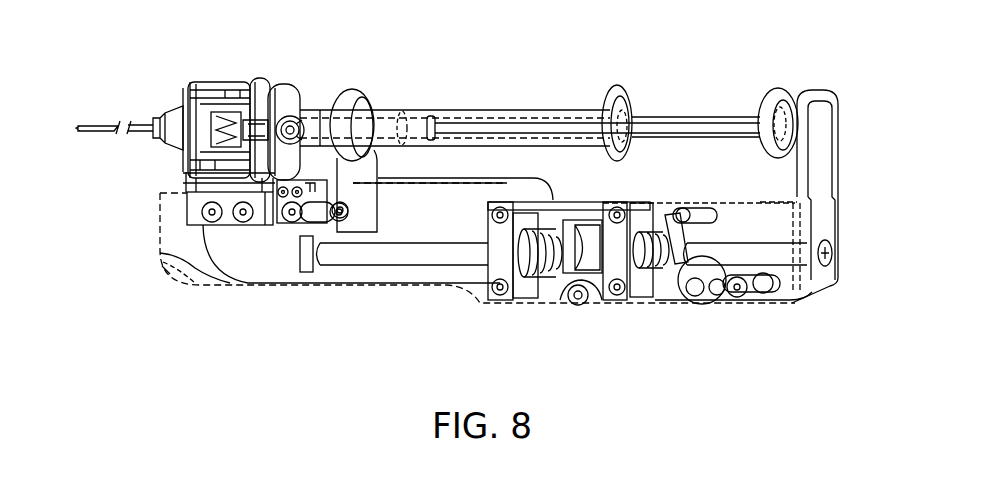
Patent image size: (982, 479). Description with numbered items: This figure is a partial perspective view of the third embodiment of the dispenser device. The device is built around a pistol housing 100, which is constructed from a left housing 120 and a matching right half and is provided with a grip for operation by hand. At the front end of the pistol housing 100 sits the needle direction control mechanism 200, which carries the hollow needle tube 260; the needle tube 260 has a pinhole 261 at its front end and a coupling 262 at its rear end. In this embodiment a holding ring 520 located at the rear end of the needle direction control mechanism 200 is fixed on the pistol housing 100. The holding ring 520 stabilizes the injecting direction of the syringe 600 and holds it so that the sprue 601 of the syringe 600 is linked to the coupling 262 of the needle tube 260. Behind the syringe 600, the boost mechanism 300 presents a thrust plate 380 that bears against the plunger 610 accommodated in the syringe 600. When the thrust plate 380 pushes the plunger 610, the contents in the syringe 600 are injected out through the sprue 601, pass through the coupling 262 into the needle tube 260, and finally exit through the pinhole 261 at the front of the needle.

The pistol housing 100 is at (134, 256).
The left housing 120 is at (162, 270).
The needle direction control mechanism 200 is at (146, 55).
The needle tube 260 is at (110, 116).
The pinhole 261 is at (95, 125).
The coupling 262 is at (170, 114).
The boost mechanism 300 is at (763, 75).
The thrust plate 380 is at (765, 100).
The holding ring 520 is at (353, 93).
The syringe 600 is at (443, 108).
The sprue 601 is at (257, 78).
The plunger 610 is at (647, 110).